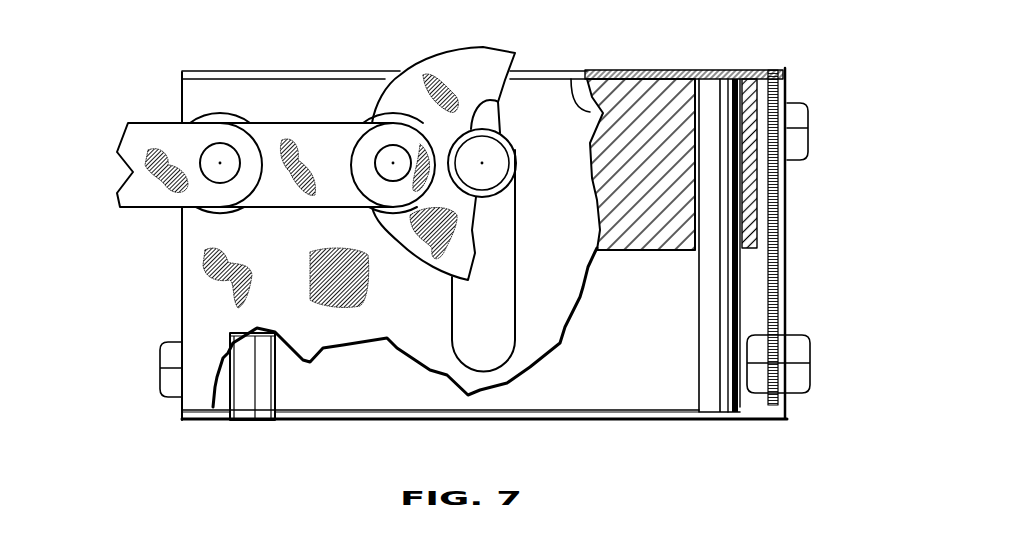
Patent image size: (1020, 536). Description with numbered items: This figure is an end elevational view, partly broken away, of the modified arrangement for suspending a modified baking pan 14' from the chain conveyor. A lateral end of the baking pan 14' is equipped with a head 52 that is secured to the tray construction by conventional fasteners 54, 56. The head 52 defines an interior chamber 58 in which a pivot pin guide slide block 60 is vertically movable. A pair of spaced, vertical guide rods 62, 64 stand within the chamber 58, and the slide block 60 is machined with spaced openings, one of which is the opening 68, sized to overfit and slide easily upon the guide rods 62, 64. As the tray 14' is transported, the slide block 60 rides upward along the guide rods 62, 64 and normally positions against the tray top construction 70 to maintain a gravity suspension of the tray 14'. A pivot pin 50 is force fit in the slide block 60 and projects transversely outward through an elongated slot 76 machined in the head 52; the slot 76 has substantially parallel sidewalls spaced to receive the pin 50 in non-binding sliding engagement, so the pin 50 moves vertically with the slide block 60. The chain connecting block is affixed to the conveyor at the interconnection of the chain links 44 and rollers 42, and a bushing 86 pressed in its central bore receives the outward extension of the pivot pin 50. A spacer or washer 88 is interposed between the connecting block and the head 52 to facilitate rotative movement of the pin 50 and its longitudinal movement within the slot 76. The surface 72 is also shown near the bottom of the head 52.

The modified baking pan 14' is at (442, 228).
The rollers 42 is at (223, 110).
The chain links 44 is at (316, 196).
The pivot pin 50 is at (497, 163).
The head 52 is at (572, 400).
The fastener 54 is at (168, 383).
The fastener 56 is at (798, 148).
The interior chamber 58 is at (348, 400).
The slide block 60 is at (682, 111).
The guide rod 62 is at (257, 400).
The guide rod 64 is at (710, 308).
The opening 68 is at (695, 228).
The tray top construction 70 is at (603, 118).
The inner bottom surface 72 is at (623, 407).
The elongated slot 76 is at (472, 297).
The bushing 86 is at (500, 102).
The spacer or washer 88 is at (437, 63).